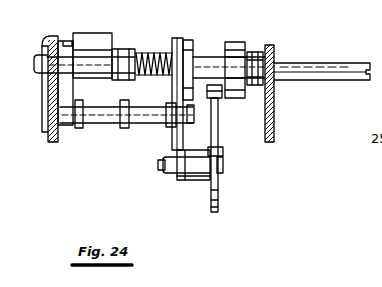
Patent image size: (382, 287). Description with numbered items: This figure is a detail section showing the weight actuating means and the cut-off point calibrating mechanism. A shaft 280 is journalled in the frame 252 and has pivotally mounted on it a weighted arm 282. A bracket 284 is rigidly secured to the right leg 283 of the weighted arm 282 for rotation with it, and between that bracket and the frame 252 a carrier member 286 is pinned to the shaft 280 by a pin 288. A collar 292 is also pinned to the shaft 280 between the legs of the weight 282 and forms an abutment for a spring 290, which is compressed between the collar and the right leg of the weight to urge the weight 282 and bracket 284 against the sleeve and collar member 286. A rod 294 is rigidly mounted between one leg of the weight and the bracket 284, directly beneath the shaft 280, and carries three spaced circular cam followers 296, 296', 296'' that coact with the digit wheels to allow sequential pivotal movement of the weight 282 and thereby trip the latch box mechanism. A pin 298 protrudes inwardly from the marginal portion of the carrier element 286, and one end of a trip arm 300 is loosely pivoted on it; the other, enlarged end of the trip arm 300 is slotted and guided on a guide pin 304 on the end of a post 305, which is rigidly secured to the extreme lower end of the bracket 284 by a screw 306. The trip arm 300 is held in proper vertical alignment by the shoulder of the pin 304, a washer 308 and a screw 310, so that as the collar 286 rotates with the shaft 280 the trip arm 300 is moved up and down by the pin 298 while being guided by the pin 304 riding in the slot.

The frame 252 is at (50, 138).
The shaft 280 is at (295, 63).
The weighted arm 282 is at (85, 40).
The right leg 283 is at (175, 38).
The bracket 284 is at (193, 33).
The carrier member 286 is at (235, 42).
The pin 288 is at (255, 52).
The spring 290 is at (143, 55).
The collar 292 is at (120, 49).
The rod 294 is at (105, 99).
The cam follower 296 is at (70, 125).
The cam follower 296' is at (139, 108).
The cam follower 296'' is at (153, 125).
The pin 298 is at (220, 99).
The trip arm 300 is at (217, 212).
The guide pin 304 is at (205, 156).
The post 305 is at (194, 181).
The screw 306 is at (168, 159).
The washer 308 is at (221, 149).
The screw 310 is at (222, 172).